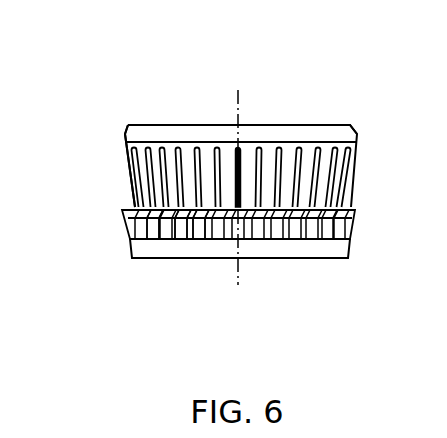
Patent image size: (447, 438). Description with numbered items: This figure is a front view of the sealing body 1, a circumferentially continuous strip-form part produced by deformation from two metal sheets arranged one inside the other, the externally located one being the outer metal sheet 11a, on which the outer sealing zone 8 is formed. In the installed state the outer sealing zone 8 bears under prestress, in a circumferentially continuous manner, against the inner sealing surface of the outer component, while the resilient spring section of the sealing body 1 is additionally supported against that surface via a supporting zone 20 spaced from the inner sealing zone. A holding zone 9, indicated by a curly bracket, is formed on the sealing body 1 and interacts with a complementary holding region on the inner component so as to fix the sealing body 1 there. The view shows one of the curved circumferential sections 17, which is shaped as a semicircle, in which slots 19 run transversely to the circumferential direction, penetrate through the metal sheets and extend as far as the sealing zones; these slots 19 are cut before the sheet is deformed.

The sealing body 1 is at (198, 125).
The supporting zone 20 is at (126, 129).
The outer metal sheet 11a is at (303, 135).
The outer sealing zone 8 is at (356, 210).
The holding zone 9 is at (112, 212).
The slots 19 is at (200, 216).
The curved circumferential section 17 is at (260, 250).